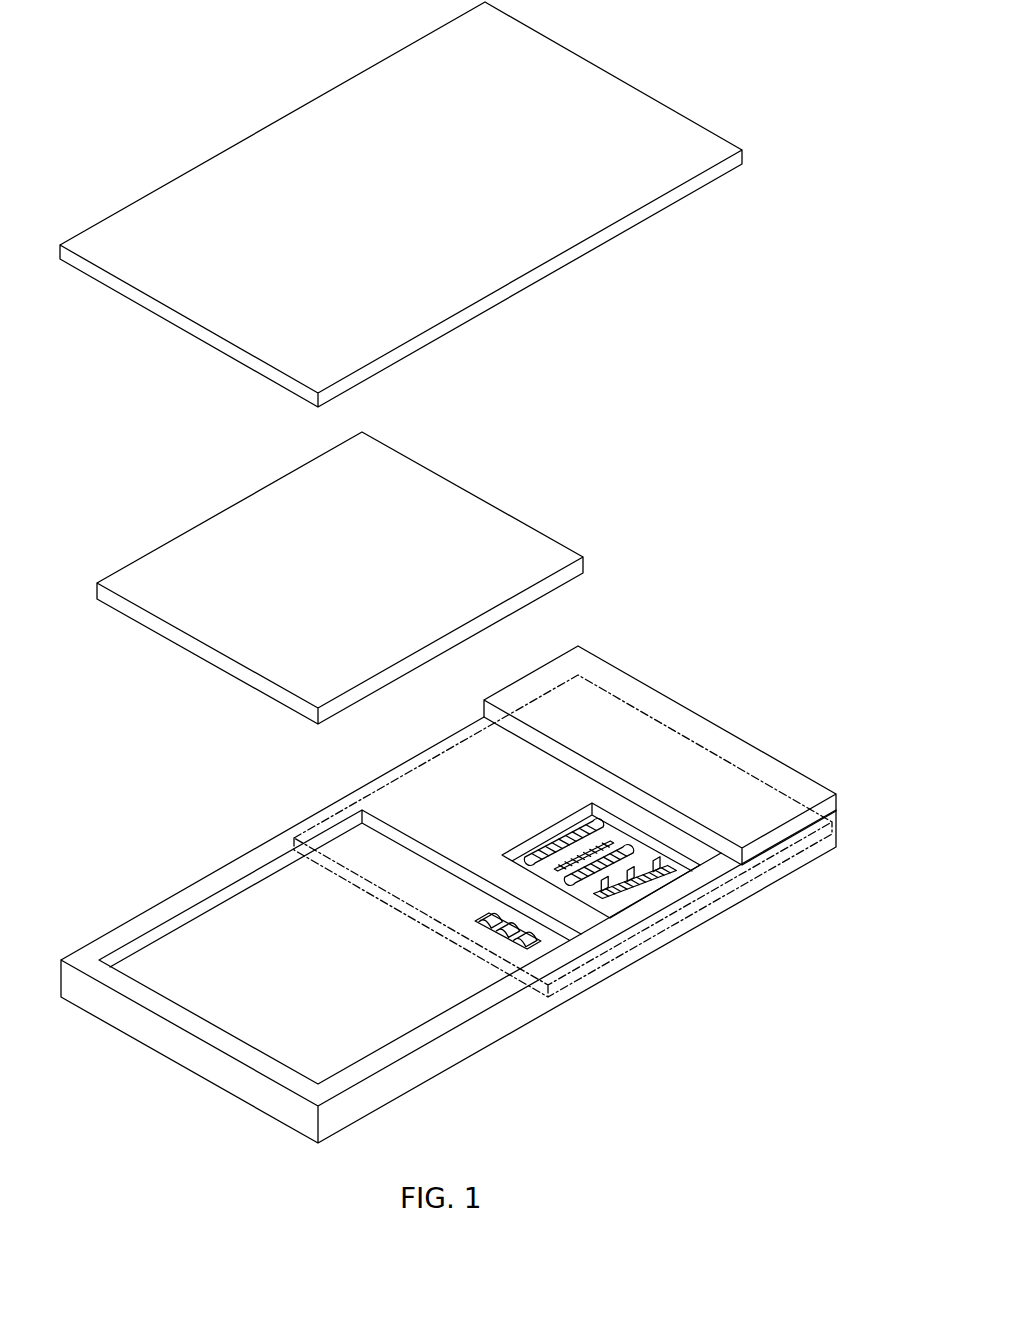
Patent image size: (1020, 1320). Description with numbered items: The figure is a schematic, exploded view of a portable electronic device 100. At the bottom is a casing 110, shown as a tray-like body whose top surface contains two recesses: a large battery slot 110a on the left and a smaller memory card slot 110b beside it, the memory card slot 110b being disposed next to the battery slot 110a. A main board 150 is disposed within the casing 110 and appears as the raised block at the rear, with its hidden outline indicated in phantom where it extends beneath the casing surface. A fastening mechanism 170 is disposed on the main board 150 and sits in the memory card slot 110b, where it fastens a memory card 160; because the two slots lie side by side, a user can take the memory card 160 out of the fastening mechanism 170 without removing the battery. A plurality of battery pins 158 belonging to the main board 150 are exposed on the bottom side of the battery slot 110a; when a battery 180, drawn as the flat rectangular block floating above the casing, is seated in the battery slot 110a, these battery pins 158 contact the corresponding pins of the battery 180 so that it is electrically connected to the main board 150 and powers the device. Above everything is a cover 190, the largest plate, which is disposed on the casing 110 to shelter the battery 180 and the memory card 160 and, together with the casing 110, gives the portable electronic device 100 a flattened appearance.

The portable electronic device 100 is at (176, 31).
The casing 110 is at (378, 1094).
The battery slot 110a is at (228, 930).
The memory card slot 110b is at (515, 850).
The main board 150 is at (712, 752).
The battery pins 158 is at (476, 909).
The memory card 160 is at (558, 843).
The fastening mechanism 170 is at (668, 871).
The battery 180 is at (460, 533).
The cover 190 is at (645, 123).